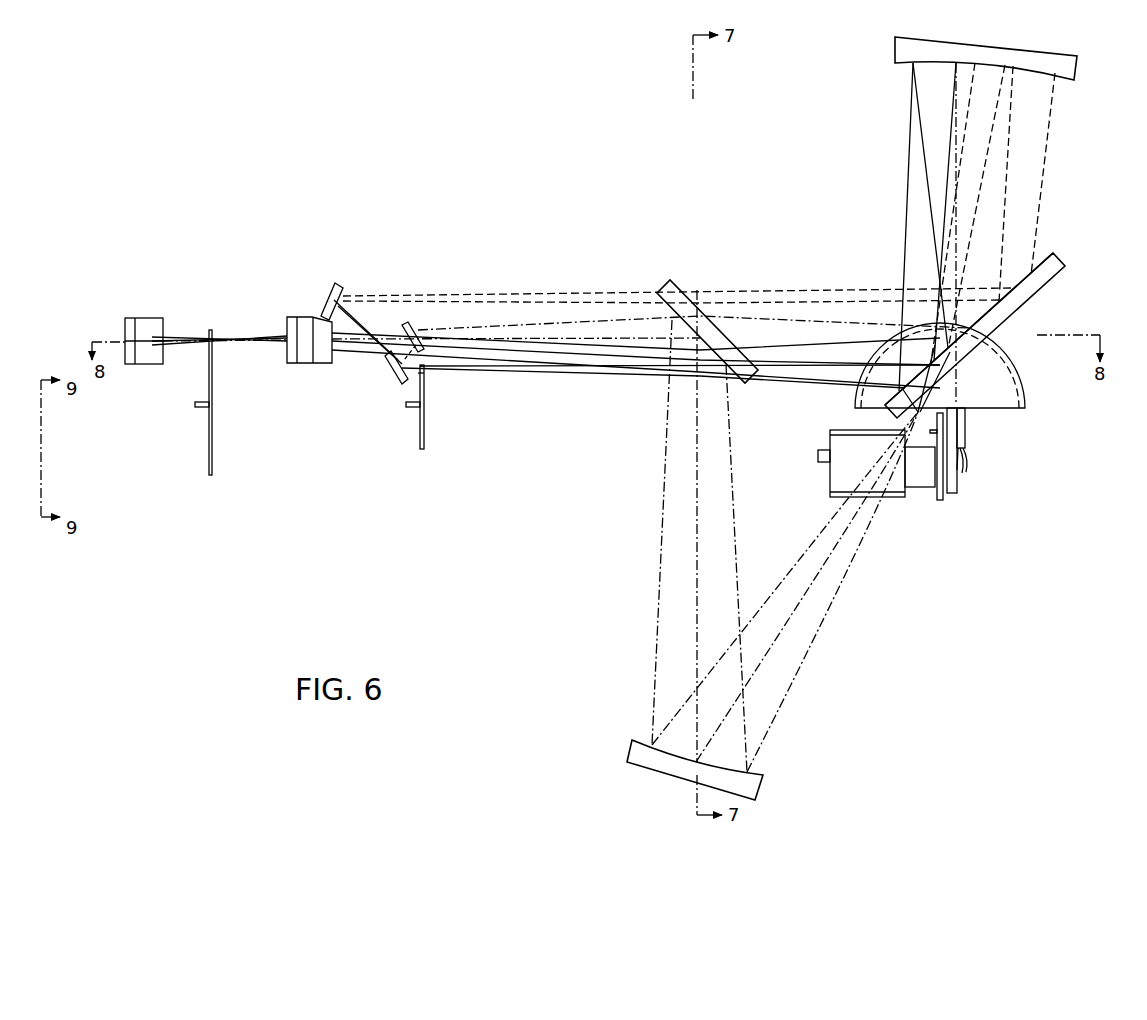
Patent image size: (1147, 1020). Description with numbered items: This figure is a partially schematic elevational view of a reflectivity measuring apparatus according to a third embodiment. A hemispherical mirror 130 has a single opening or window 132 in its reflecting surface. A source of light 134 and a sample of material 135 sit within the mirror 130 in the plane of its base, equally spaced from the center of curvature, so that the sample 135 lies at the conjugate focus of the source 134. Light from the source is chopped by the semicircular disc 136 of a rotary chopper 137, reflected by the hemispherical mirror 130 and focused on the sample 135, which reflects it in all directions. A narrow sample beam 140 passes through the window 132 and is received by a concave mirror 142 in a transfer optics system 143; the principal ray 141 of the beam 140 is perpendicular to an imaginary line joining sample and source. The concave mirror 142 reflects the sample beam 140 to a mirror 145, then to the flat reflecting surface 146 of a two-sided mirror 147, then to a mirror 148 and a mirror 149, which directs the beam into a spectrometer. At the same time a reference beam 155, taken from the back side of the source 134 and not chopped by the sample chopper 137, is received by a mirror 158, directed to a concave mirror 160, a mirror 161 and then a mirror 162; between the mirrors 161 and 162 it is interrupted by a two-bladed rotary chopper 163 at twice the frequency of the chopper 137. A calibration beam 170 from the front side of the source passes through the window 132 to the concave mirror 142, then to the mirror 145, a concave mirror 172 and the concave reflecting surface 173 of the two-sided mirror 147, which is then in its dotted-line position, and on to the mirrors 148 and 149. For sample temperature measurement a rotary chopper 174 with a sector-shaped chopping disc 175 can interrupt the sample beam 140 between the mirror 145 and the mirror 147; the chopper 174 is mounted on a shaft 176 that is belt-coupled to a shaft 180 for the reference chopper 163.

The hemispherical mirror 130 is at (1022, 400).
The window 132 is at (995, 330).
The source of light 134 is at (918, 420).
The sample of material 135 is at (965, 408).
The semicircular disc 136 is at (944, 497).
The rotary chopper 137 is at (913, 490).
The sample beam 140 is at (985, 156).
The principal ray 141 is at (955, 121).
The concave mirror 142 is at (1078, 68).
The transfer optics system 143 is at (688, 238).
The mirror 145 is at (1043, 255).
The flat reflecting surface 146 is at (420, 374).
The two-sided mirror 147 is at (385, 362).
The mirror 148 is at (405, 322).
The mirror 149 is at (300, 317).
The reference beam 155 is at (247, 342).
The mirror 158 is at (830, 486).
The concave mirror 160 is at (629, 765).
The mirror 161 is at (678, 284).
The mirror 162 is at (157, 317).
The rotary chopper 163 is at (213, 440).
The calibration beam 170 is at (968, 111).
The concave mirror 172 is at (339, 282).
The concave reflecting surface 173 is at (395, 378).
The rotary chopper 174 is at (428, 440).
The chopping disc 175 is at (426, 400).
The shaft 176 is at (413, 409).
The shaft 180 is at (203, 408).